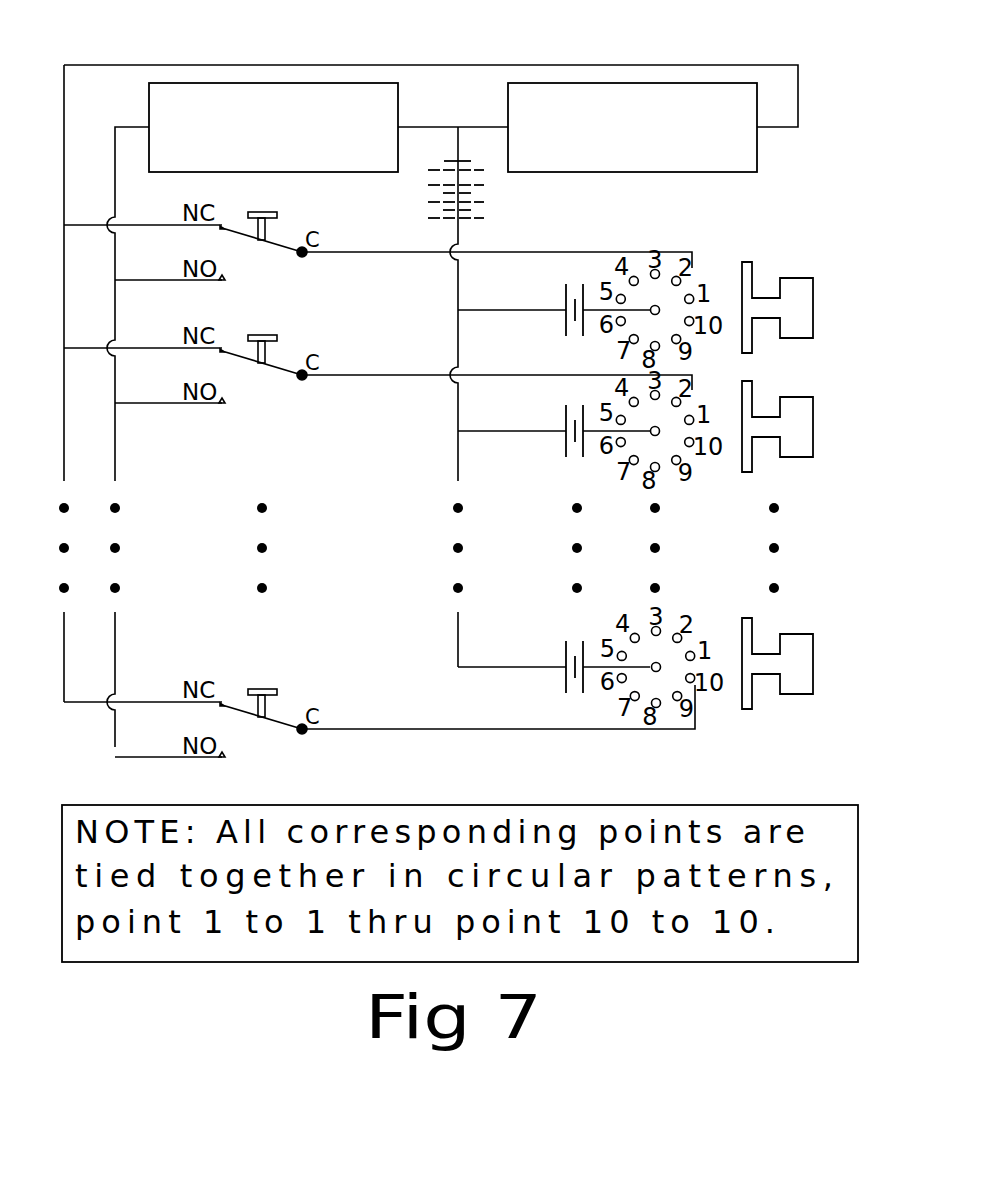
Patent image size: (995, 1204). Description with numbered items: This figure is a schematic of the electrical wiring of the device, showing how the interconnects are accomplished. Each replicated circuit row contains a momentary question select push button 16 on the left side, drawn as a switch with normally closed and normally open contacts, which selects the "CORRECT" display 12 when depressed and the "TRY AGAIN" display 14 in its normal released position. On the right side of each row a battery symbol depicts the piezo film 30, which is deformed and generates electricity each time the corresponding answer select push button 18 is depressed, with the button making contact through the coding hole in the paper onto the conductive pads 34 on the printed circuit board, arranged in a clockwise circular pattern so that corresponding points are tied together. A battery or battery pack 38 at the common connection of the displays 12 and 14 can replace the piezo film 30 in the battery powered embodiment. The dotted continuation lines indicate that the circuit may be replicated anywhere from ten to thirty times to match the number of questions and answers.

The "CORRECT" display 12 is at (277, 83).
The "TRY AGAIN" display 14 is at (643, 83).
The question select push button 16 is at (268, 725).
The answer select push button 18 is at (813, 290).
The piezo film (power source) 30 is at (577, 693).
The conductive pads on P.C.B. 34 is at (697, 290).
The battery or battery pack 38 is at (482, 192).